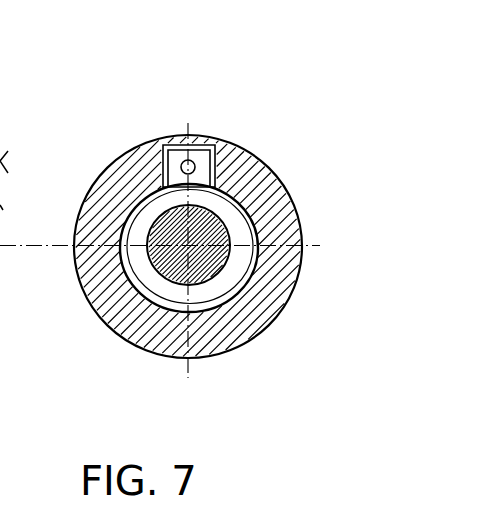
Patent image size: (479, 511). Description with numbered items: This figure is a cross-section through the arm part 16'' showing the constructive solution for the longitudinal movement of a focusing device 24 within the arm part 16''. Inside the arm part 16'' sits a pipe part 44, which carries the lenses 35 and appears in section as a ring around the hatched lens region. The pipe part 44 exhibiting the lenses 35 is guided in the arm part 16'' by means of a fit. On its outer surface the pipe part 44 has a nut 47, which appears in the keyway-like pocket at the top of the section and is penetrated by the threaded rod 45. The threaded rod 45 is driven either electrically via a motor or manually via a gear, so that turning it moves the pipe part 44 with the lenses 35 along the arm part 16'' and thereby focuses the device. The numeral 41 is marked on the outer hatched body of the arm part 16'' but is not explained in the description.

The arm part 16'' is at (173, 229).
The annular body 41 is at (200, 340).
The pipe part 44 is at (222, 209).
The threaded rod 45 is at (176, 145).
The nut 47 is at (204, 160).
The focusing device 24 is at (161, 271).
The lenses 35 is at (174, 281).